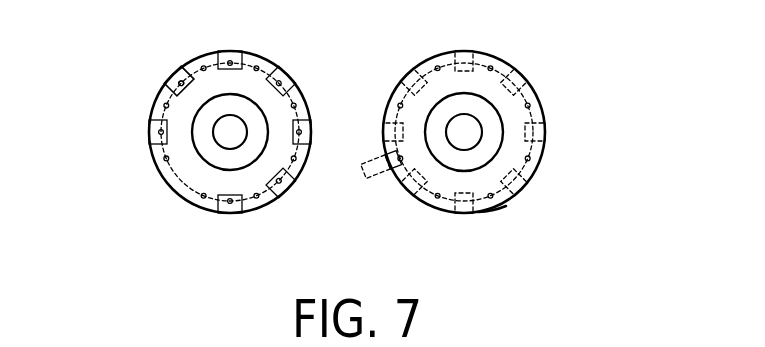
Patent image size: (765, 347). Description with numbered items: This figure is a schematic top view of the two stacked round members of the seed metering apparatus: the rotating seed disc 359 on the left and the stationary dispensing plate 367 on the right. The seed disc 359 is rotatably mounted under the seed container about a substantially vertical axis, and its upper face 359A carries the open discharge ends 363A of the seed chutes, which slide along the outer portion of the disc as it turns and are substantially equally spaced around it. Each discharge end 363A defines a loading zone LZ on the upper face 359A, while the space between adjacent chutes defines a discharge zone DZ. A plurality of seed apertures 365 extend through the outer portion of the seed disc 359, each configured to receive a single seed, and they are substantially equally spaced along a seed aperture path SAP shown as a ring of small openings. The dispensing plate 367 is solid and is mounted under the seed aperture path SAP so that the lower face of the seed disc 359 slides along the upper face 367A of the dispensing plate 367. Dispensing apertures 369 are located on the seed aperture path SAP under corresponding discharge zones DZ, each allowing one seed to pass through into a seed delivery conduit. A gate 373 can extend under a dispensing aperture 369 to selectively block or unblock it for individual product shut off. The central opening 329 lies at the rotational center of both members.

The seed disc 359 is at (204, 54).
The upper face of the seed disc 359A is at (165, 96).
The discharge end of seed chute 363A is at (273, 74).
The seed aperture 365 is at (204, 196).
The central hub / axis 329 is at (213, 136).
The dispensing plate 367 is at (497, 56).
The upper face of the dispensing plate 367A is at (492, 205).
The dispensing aperture 369 is at (530, 104).
The gate 373 is at (378, 162).
The seed aperture path SAP is at (163, 147).
The loading zone LZ is at (285, 184).
The discharge zone DZ is at (258, 197).